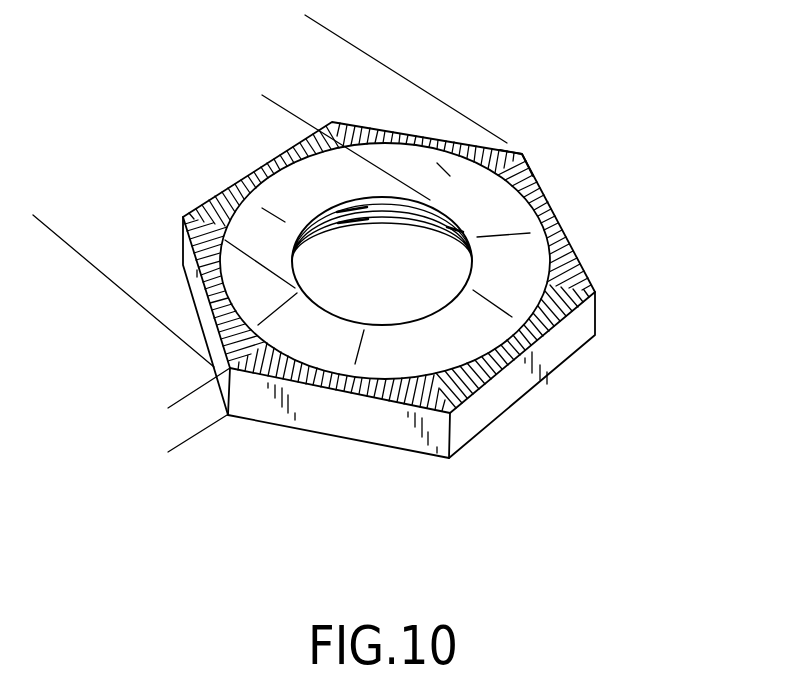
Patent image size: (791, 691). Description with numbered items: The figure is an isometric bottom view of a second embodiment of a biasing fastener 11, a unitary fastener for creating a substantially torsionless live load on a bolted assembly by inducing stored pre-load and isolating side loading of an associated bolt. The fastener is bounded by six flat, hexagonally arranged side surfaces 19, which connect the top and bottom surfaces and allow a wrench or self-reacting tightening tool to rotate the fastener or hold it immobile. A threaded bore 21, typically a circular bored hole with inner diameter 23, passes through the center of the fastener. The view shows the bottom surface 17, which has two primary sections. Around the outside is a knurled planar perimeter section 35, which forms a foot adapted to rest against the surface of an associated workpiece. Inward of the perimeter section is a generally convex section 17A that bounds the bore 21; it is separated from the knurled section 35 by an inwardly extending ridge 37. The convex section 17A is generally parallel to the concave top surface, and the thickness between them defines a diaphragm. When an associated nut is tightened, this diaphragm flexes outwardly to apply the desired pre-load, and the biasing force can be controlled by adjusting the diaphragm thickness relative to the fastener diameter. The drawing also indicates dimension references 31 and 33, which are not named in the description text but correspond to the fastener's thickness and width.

The biasing fastener 11 is at (605, 385).
The bottom surface 17 is at (540, 247).
The convex section 17A is at (515, 272).
The side surfaces 19 is at (350, 433).
The threaded bore 21 is at (447, 227).
The inner diameter 23 is at (272, 111).
The thickness 31 is at (190, 348).
The across-corners width 33 is at (58, 228).
The knurled planar perimeter section 35 is at (468, 384).
The inwardly extending ridge 37 is at (530, 163).